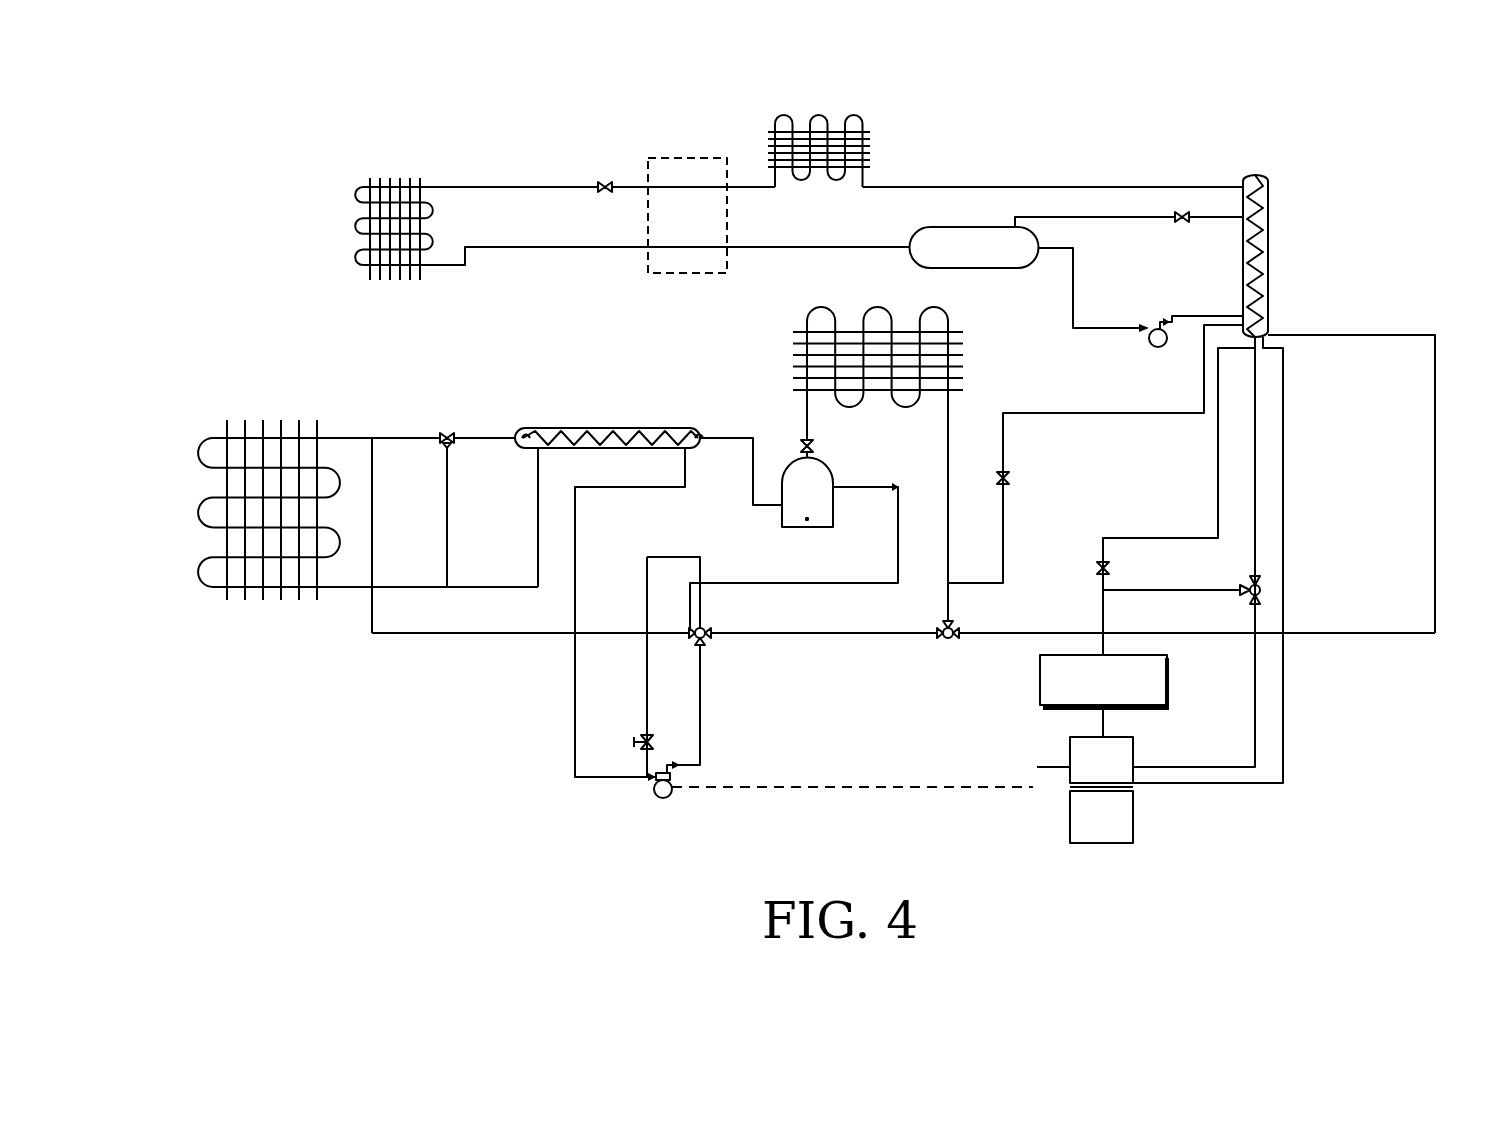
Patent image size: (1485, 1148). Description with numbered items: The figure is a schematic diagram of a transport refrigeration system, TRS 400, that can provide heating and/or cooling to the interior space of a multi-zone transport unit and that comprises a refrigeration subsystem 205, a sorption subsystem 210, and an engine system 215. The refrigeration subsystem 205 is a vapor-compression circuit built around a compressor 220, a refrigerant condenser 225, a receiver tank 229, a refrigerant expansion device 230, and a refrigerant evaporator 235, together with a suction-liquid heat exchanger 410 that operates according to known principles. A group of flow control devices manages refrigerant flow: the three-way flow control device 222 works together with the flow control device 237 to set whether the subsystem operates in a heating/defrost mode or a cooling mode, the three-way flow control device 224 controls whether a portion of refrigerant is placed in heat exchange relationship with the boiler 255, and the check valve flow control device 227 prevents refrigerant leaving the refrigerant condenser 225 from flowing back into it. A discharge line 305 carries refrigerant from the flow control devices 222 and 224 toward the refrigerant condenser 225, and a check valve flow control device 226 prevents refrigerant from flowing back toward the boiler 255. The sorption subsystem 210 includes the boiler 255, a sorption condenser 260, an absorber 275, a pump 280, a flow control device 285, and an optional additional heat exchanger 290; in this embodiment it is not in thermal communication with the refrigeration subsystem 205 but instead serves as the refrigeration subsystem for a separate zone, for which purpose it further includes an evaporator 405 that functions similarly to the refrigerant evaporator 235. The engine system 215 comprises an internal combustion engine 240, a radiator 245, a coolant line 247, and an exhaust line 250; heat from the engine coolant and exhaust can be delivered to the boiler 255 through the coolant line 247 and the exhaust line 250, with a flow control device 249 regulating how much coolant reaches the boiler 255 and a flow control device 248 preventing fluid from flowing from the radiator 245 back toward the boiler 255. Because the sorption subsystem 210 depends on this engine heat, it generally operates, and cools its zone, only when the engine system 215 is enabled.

The TRS 400 is at (310, 118).
The evaporator 405 is at (354, 190).
The additional heat exchanger 290 is at (688, 158).
The sorption condenser 260 is at (820, 115).
The boiler 255 is at (1270, 296).
The sorption subsystem 210 is at (1318, 246).
The flow control device 285 is at (1182, 226).
The absorber 275 is at (988, 271).
The pump 280 is at (1160, 349).
The refrigerant condenser 225 is at (965, 367).
The flow control device 227 is at (816, 445).
The receiver tank 229 is at (793, 535).
The flow control device 226 is at (1012, 478).
The coolant line 247 is at (1120, 538).
The flow control device 248 is at (1109, 568).
The flow control device 249 is at (1250, 604).
The exhaust line 250 is at (1284, 503).
The discharge line 305 is at (1412, 635).
The radiator 245 is at (1170, 681).
The engine system 215 is at (1172, 802).
The internal combustion engine 240 is at (1102, 793).
The refrigeration subsystem 205 is at (176, 518).
The refrigerant evaporator 235 is at (252, 605).
The refrigerant expansion device 230 is at (447, 430).
The suction-liquid heat exchanger 410 is at (561, 428).
The flow control device 222 is at (707, 647).
The flow control device 237 is at (640, 738).
The compressor 220 is at (663, 798).
The flow control device 224 is at (948, 650).